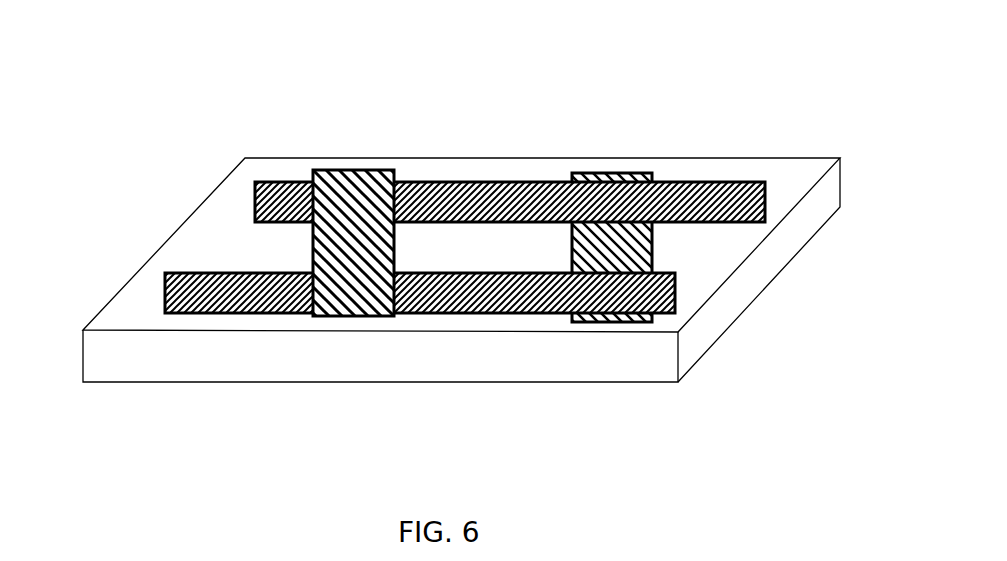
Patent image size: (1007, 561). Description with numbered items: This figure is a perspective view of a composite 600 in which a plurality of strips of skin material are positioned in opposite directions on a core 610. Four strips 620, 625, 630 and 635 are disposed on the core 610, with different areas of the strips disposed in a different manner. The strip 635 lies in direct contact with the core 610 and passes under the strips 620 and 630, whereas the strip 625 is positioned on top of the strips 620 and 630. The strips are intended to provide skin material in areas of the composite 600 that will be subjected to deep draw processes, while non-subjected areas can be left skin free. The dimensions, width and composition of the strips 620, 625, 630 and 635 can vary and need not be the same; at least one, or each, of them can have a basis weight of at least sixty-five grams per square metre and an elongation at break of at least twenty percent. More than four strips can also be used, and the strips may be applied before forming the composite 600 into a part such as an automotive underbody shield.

The composite 600 is at (163, 108).
The core 610 is at (730, 315).
The strip 620 is at (242, 313).
The strip 625 is at (333, 177).
The strip 630 is at (448, 183).
The strip 635 is at (610, 178).